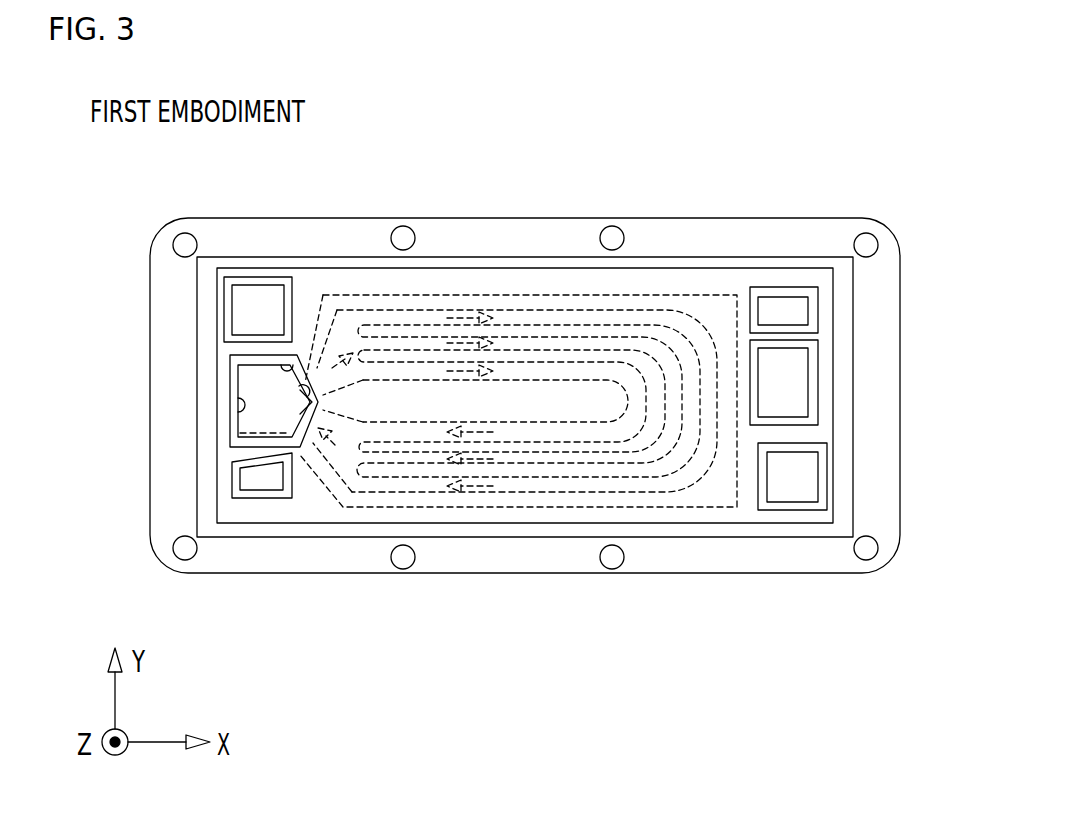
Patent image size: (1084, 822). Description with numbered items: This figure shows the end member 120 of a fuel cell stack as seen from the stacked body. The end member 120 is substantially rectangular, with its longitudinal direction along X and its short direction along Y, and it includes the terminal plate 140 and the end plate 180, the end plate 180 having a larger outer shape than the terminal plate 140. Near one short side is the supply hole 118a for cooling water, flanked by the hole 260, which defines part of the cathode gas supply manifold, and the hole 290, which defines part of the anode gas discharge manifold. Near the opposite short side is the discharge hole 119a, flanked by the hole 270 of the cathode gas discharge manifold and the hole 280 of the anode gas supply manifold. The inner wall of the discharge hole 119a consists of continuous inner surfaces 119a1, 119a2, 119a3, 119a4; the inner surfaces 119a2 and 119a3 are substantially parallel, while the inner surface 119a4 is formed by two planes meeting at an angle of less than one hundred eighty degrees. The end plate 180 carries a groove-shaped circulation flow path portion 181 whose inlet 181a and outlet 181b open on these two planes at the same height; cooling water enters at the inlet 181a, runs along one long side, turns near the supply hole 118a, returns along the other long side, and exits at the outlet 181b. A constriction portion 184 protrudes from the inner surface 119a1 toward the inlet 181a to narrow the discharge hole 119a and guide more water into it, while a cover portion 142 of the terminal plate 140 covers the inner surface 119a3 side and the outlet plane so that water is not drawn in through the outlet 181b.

The end member 120 is at (514, 216).
The terminal plate 140 is at (605, 282).
The end plate 180 is at (773, 555).
The circulation flow path portion 181 is at (530, 487).
The inlet 181a is at (315, 378).
The outlet 181b is at (303, 450).
The hole 270 is at (245, 308).
The hole 280 is at (258, 482).
The hole 290 is at (797, 313).
The hole 260 is at (795, 478).
The supply hole 118a is at (795, 382).
The discharge hole 119a is at (278, 408).
The inner surface 119a1 is at (307, 400).
The inner surface 119a2 is at (297, 373).
The inner surface 119a3 is at (285, 495).
The inner surface 119a4 is at (322, 390).
The constriction portion 184 is at (257, 392).
The cover portion 142 is at (284, 429).